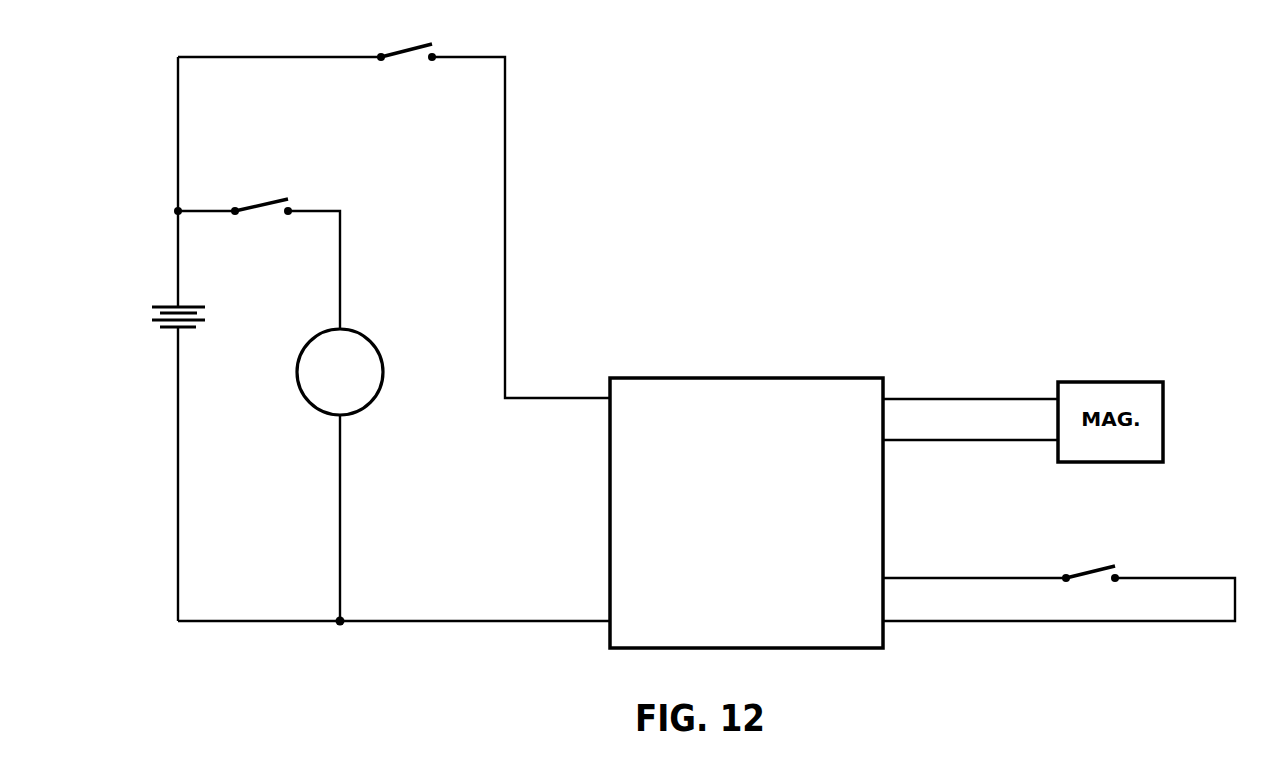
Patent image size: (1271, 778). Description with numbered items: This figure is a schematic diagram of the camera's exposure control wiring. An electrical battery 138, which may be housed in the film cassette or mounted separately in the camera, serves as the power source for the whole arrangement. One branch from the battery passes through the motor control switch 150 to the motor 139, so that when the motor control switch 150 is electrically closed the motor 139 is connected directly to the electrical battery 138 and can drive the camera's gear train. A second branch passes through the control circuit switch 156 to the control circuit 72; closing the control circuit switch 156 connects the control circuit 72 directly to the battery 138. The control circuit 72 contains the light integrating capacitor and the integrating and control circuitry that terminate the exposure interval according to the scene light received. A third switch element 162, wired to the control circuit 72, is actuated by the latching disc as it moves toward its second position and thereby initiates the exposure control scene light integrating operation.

The control circuit 72 is at (808, 378).
The electrical battery 138 is at (152, 307).
The motor 139 is at (356, 337).
The motor control switch 150 is at (264, 200).
The control circuit switch 156 is at (410, 50).
The third switch element 162 is at (1086, 571).